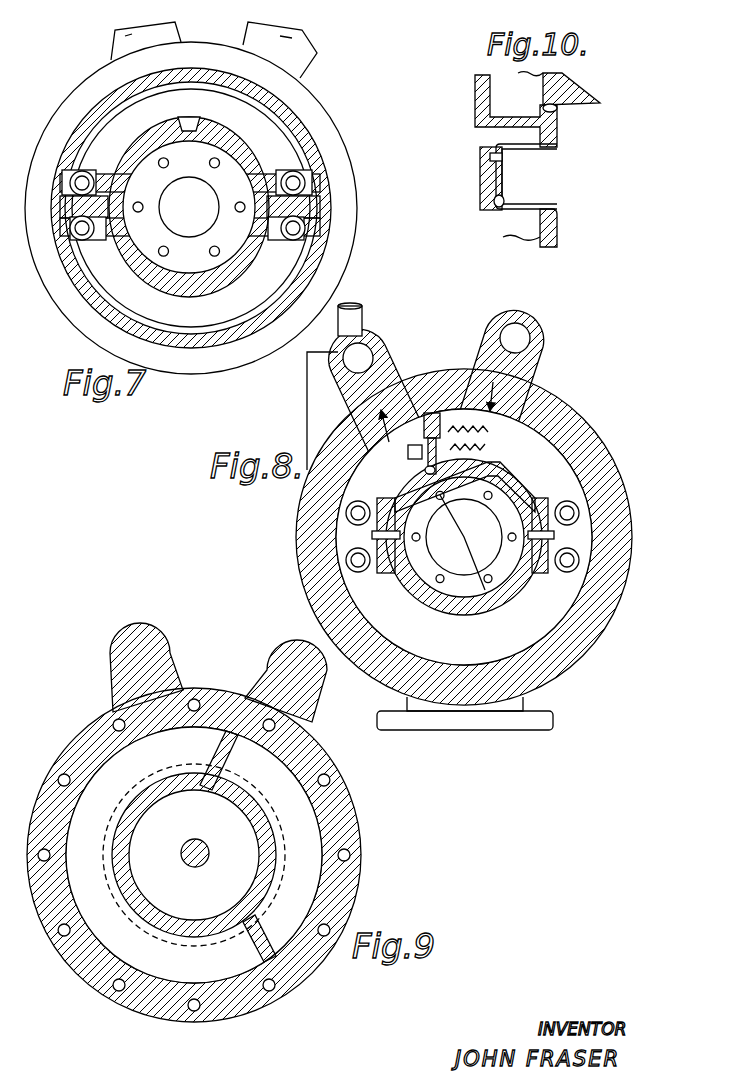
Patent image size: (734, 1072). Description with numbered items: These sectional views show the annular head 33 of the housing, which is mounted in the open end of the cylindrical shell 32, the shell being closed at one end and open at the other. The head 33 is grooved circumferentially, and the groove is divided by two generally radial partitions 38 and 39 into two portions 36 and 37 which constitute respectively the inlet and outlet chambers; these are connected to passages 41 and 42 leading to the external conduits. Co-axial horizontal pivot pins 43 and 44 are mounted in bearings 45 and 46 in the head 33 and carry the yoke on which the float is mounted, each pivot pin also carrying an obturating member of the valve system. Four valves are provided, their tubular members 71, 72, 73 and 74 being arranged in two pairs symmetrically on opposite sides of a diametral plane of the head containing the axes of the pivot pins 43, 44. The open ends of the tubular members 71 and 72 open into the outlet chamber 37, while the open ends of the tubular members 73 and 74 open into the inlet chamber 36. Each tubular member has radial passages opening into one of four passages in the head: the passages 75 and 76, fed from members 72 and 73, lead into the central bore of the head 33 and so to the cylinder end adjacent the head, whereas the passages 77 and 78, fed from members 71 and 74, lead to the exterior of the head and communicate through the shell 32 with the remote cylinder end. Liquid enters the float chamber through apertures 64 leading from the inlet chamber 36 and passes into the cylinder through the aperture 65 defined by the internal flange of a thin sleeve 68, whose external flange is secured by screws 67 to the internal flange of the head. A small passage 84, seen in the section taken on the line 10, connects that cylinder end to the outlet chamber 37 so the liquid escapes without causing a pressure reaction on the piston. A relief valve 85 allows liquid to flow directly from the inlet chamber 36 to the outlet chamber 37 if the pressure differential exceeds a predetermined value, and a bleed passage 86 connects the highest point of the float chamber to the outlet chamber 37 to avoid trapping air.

In FIG. 8, the section line 10— 10 is at (412, 441).
In FIG. 7, the cylindrical shell 32 is at (313, 177).
In FIG. 9, the cylindrical shell 32 is at (348, 798).
In FIG. 7, the annular head 33 is at (188, 117).
In FIG. 8, the inlet chamber 36 is at (393, 680).
In FIG. 9, the inlet chamber 36 is at (110, 903).
In FIG. 10, the outlet chamber 37 is at (500, 100).
In FIG. 8, the outlet chamber 37 is at (313, 597).
In FIG. 9, the outlet chamber 37 is at (284, 778).
In FIG. 8, the radial partition 38 is at (433, 412).
In FIG. 9, the radial partition 38 is at (222, 790).
In FIG. 8, the radial partition 39 is at (334, 618).
In FIG. 9, the radial partition 39 is at (256, 944).
In FIG. 8, the passage 41 is at (512, 364).
In FIG. 8, the passage 42 is at (365, 392).
In FIG. 8, the pivot pin 43 is at (372, 536).
In FIG. 8, the pivot pin 44 is at (554, 536).
In FIG. 8, the bearing 45 is at (401, 535).
In FIG. 8, the bearing 46 is at (525, 535).
In FIG. 9, the apertures 64 is at (195, 748).
In FIG. 10, the aperture 65 is at (498, 209).
In FIG. 10, the screws 67 is at (558, 228).
In FIG. 10, the thin sleeve 68 is at (540, 150).
In FIG. 7, the tubular member 71 is at (306, 183).
In FIG. 8, the tubular member 71 is at (346, 507).
In FIG. 7, the tubular member 72 is at (306, 228).
In FIG. 8, the tubular member 72 is at (346, 566).
In FIG. 7, the tubular member 73 is at (100, 171).
In FIG. 8, the tubular member 73 is at (567, 501).
In FIG. 7, the tubular member 74 is at (84, 241).
In FIG. 8, the tubular member 74 is at (565, 572).
In FIG. 7, the passage 75 is at (112, 178).
In FIG. 7, the passage 76 is at (277, 236).
In FIG. 7, the passage 77 is at (100, 238).
In FIG. 7, the passage 78 is at (275, 172).
In FIG. 10, the small passage 84 is at (556, 110).
In FIG. 8, the small passage 84 is at (426, 470).
In FIG. 8, the relief valve 85 is at (462, 457).
In FIG. 9, the bleed passage 86 is at (228, 748).